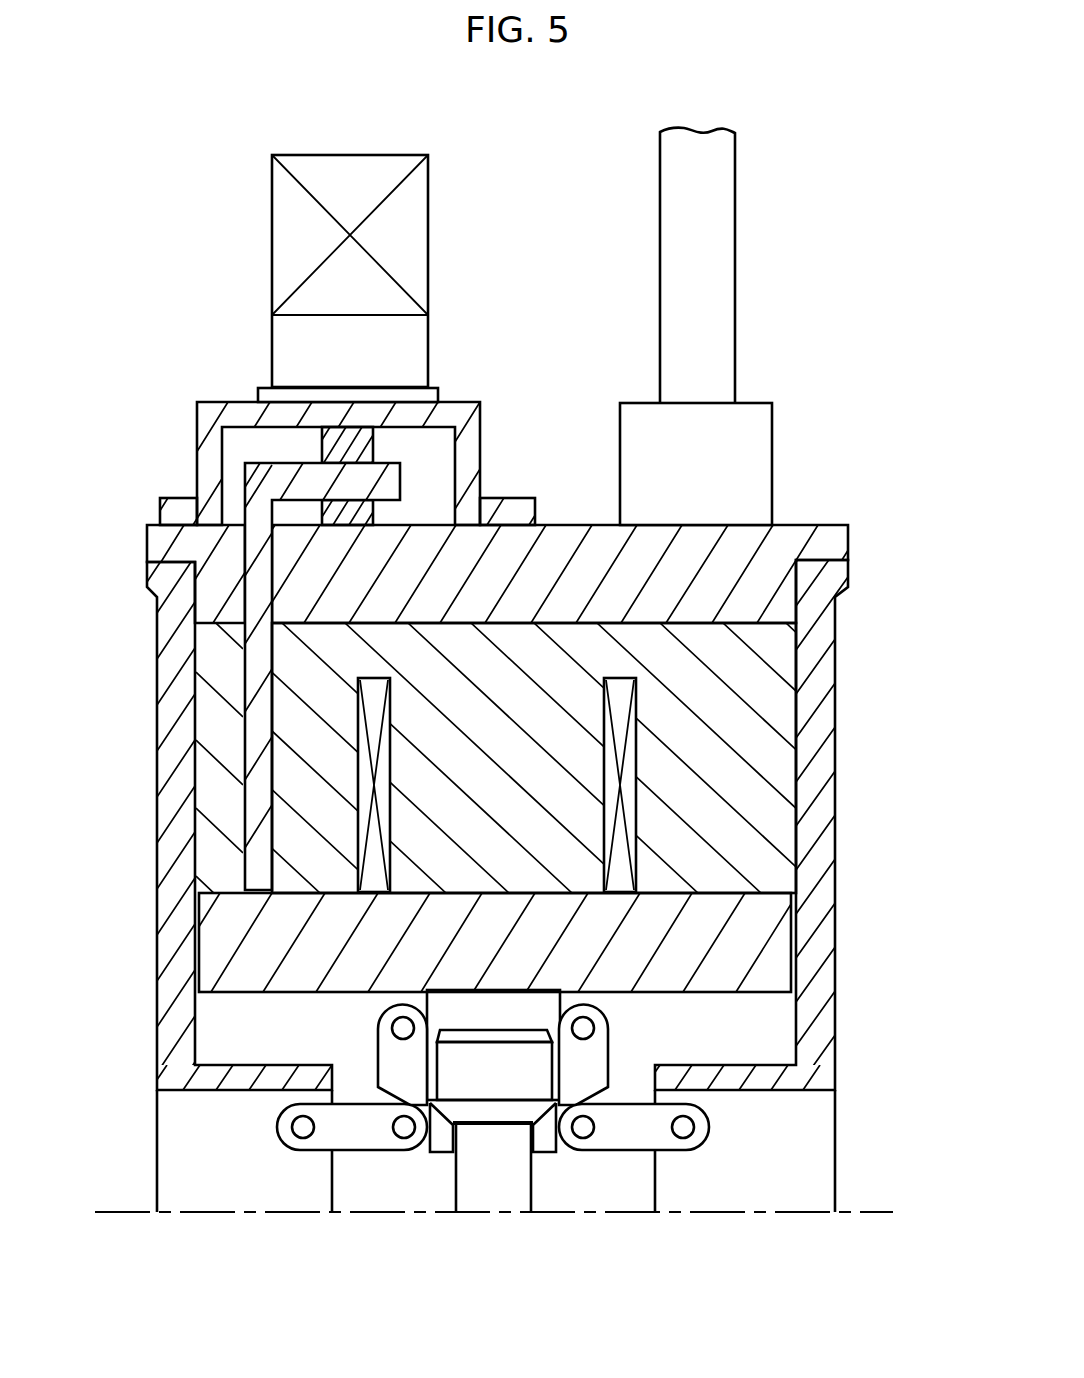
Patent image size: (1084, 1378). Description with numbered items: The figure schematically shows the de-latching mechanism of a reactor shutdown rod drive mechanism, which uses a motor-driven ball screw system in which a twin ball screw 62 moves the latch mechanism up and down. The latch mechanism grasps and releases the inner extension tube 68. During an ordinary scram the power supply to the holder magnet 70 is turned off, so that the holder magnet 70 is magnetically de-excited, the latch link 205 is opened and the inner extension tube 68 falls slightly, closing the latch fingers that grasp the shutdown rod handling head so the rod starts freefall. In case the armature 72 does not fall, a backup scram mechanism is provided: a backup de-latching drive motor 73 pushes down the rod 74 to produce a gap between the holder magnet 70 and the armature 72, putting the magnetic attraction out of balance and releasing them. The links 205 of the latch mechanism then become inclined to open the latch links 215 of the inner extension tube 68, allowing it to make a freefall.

The twin ball screw 62 is at (717, 243).
The inner extension tube 68 is at (517, 1185).
The holder magnet 70 is at (768, 768).
The armature 72 is at (768, 923).
The backup de-latching drive motor 73 is at (289, 265).
The rod 74 is at (250, 797).
The latch link 205 is at (363, 1133).
The latch link of the inner extension tube 215 is at (590, 1063).